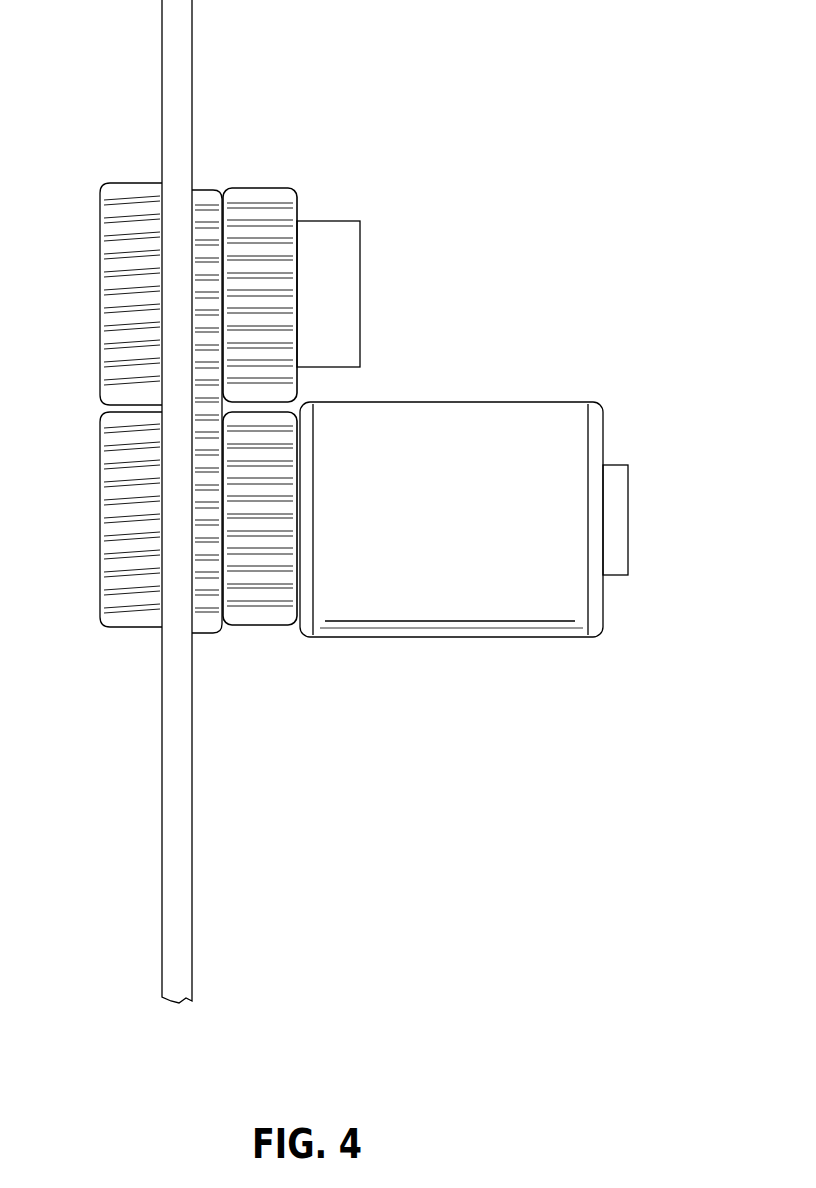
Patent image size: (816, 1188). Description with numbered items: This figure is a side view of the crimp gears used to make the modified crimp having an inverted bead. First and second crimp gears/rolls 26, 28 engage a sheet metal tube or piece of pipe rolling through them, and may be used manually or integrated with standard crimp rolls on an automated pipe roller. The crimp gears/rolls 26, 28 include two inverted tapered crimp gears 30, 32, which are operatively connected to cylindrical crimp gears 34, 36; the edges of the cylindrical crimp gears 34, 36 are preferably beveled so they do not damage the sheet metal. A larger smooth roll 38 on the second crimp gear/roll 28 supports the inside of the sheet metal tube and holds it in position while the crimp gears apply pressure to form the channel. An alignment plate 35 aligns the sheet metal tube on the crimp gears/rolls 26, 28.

The first crimp gear/roll 26 is at (360, 177).
The second crimp gear/roll 28 is at (642, 435).
The inverted tapered crimp gear 30 is at (200, 183).
The inverted tapered crimp gear 32 is at (105, 621).
The cylindrical crimp gear 34 is at (275, 185).
The alignment plate 35 is at (183, 857).
The cylindrical crimp gear 36 is at (255, 622).
The smooth roll 38 is at (448, 636).